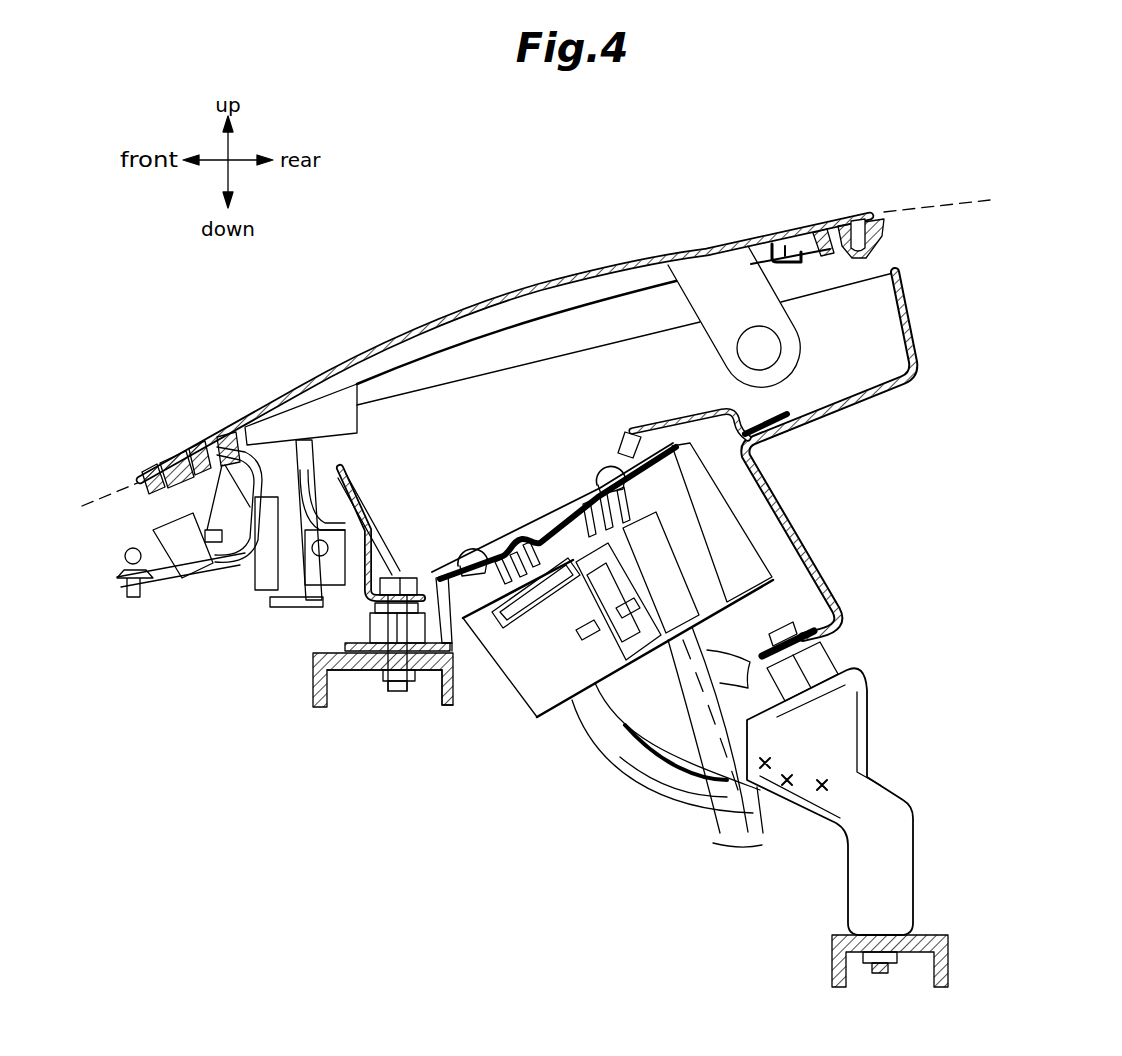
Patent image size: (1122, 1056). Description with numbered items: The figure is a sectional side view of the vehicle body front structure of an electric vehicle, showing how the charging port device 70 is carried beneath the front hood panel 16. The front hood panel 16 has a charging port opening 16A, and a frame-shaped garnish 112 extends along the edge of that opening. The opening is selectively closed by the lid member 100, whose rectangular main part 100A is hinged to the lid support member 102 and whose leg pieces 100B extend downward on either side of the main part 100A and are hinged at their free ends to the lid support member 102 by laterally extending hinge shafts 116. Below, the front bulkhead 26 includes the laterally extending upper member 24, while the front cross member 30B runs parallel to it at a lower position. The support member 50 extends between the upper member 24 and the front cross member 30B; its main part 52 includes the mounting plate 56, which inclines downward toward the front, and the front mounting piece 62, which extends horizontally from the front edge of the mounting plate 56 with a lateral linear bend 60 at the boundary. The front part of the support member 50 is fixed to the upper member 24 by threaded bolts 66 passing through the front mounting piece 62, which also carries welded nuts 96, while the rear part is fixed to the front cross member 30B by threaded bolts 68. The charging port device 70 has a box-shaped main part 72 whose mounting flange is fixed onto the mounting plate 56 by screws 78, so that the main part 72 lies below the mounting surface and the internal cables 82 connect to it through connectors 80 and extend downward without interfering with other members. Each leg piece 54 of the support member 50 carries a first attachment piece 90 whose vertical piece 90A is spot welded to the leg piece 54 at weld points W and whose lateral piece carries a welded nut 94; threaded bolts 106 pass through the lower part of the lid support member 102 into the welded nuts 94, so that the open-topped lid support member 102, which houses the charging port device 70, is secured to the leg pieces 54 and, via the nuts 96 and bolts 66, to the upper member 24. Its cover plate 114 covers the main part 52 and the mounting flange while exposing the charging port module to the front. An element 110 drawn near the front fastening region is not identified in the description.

The front hood panel 16 is at (932, 200).
The charging port opening 16A is at (857, 217).
The upper member 24 is at (432, 705).
The front bulkhead 26 is at (300, 694).
The front cross member 30B is at (932, 937).
The support member 50 is at (442, 597).
The main part 52 is at (548, 513).
The leg pieces 54 is at (918, 802).
The mounting plate 56 is at (520, 560).
The linear bend 60 is at (461, 651).
The front mounting piece 62 is at (367, 670).
The threaded bolts 66 is at (393, 692).
The threaded bolts 68 is at (877, 977).
The charging port device 70 is at (570, 473).
The main part 72 is at (687, 553).
The screws 78 is at (610, 468).
The connectors 80 is at (553, 697).
The internal cables 82 is at (722, 668).
The first attachment piece 90 is at (840, 697).
The vertical piece 90A is at (843, 735).
The welded nut 94 is at (818, 660).
The welded nuts 96 is at (377, 630).
The lid member 100 is at (700, 243).
The rectangular main part 100A is at (523, 288).
The leg pieces 100B is at (692, 275).
The lid support member 102 is at (823, 410).
The threaded bolts 106 is at (782, 618).
The nut 110 is at (402, 578).
The frame-shaped garnish 112 is at (798, 222).
The cover plate 114 is at (687, 425).
The hinge shafts 116 is at (773, 349).
The weld points W is at (788, 778).